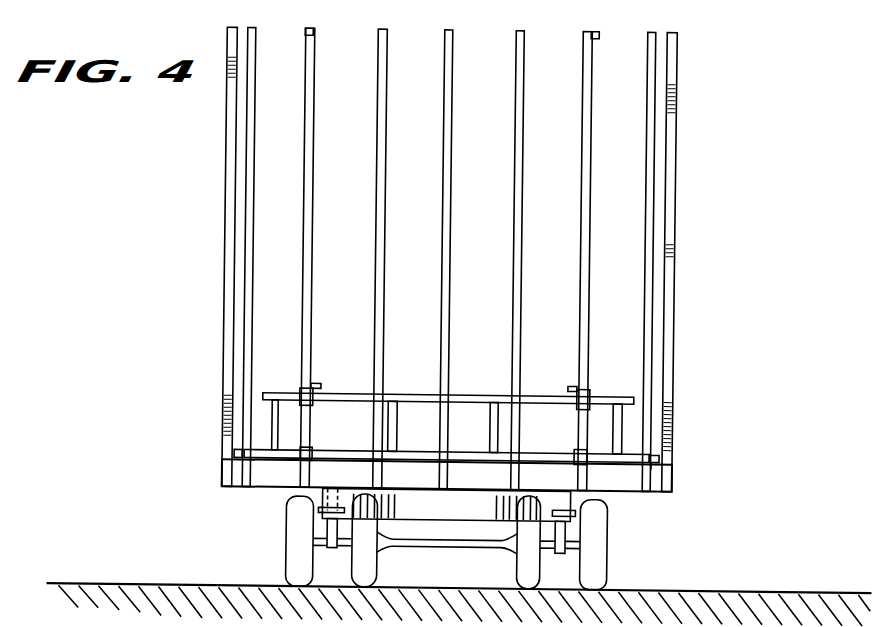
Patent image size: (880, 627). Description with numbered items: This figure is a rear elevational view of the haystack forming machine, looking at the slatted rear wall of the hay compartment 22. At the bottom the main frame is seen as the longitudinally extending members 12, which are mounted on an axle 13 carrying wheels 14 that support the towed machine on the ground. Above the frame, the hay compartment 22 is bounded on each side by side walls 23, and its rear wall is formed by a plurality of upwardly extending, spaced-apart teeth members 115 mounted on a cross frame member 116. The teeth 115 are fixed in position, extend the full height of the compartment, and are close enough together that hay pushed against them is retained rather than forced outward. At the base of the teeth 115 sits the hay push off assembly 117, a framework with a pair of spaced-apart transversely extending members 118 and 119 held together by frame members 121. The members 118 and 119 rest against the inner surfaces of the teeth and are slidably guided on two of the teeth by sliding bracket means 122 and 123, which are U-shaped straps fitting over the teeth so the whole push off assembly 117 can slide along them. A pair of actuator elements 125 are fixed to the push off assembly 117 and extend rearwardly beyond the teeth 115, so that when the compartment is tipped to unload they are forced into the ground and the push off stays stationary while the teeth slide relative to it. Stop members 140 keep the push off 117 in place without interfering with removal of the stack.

The longitudinally extending members 12 is at (340, 549).
The axle 13 is at (446, 549).
The wheels 14 is at (290, 560).
The hay compartment 22 is at (456, 247).
The side walls 23 is at (222, 238).
The teeth members 115 is at (580, 53).
The cross frame member 116 is at (271, 492).
The hay push off assembly 117 is at (333, 395).
The transversely extending member 118 is at (423, 378).
The transversely extending member 119 is at (462, 452).
The frame members 121 is at (399, 439).
The sliding bracket means 122 is at (301, 449).
The sliding bracket means 123 is at (579, 448).
The actuator elements 125 is at (314, 386).
The stop members 140 is at (305, 34).